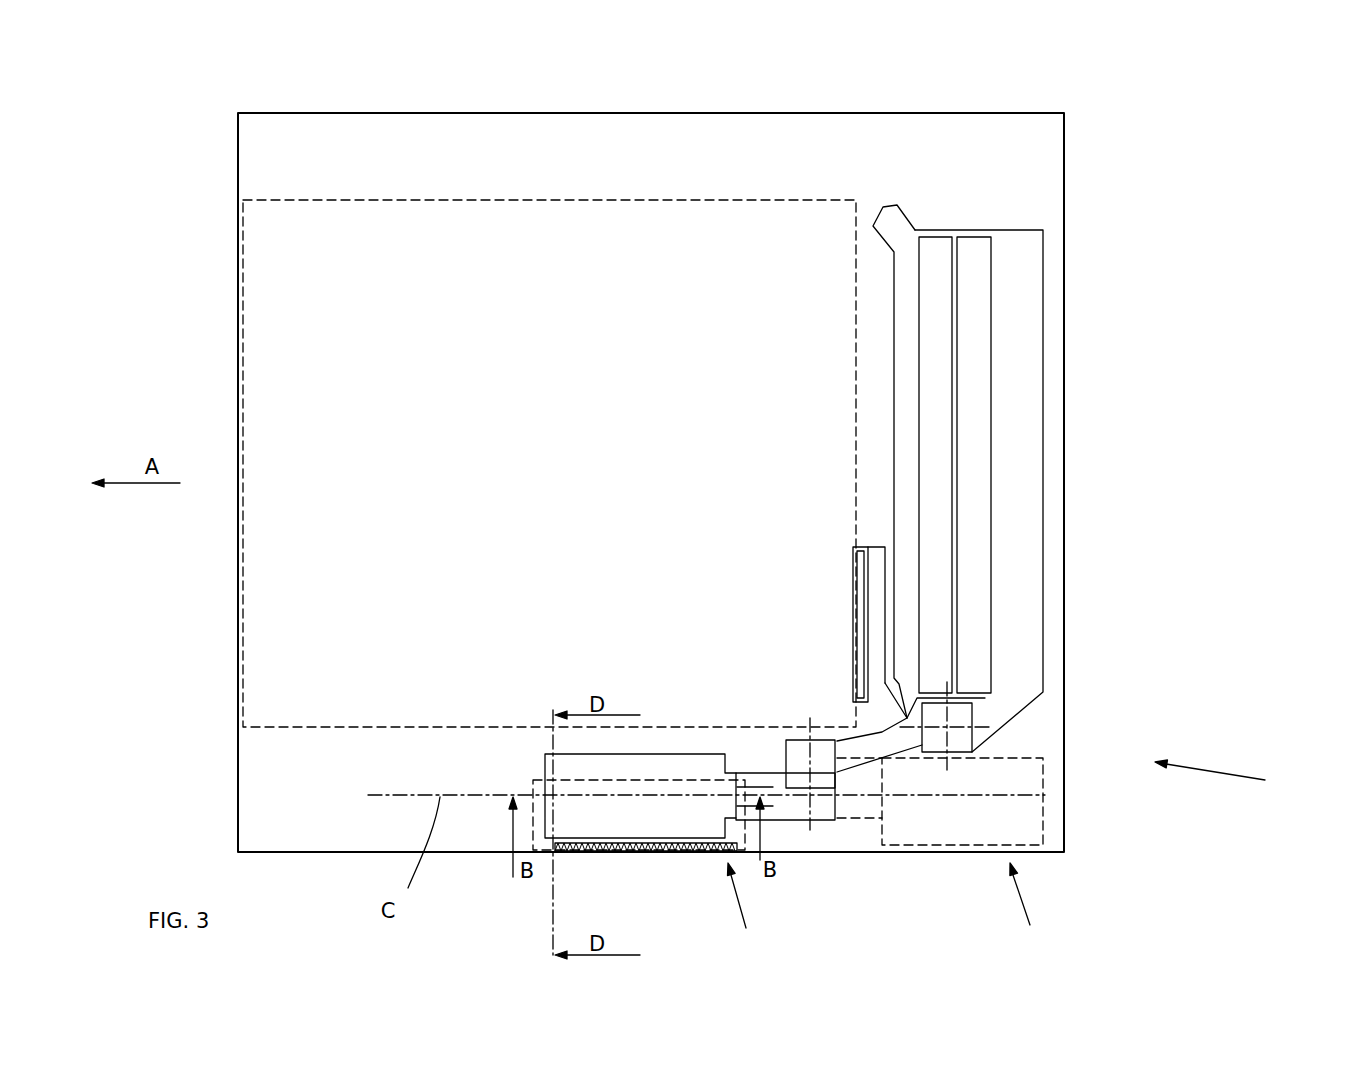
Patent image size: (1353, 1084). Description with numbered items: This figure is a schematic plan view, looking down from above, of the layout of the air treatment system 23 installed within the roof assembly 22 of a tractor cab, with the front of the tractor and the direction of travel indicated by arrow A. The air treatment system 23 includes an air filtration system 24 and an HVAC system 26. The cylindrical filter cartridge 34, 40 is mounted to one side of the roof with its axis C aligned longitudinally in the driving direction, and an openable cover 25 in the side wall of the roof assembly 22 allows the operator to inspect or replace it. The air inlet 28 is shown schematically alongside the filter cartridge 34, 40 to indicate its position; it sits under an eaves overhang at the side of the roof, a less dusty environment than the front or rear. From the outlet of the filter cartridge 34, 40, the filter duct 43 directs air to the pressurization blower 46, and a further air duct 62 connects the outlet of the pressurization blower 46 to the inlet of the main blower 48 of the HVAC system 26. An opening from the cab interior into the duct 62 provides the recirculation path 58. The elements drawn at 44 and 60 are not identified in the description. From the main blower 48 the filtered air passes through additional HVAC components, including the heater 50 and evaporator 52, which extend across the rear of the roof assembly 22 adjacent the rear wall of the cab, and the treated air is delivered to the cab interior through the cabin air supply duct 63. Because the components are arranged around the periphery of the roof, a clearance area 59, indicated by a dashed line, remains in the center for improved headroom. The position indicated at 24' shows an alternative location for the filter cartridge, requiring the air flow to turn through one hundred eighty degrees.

The roof assembly 22 is at (325, 112).
The air treatment system 23 is at (1231, 784).
The air filtration system 24 is at (758, 907).
The alternative filter cartridge position 24' is at (954, 855).
The openable cover 25 is at (530, 808).
The HVAC system 26 is at (997, 410).
The air inlet 28 is at (697, 855).
The filter cartridge 34 is at (640, 833).
The filter cartridge 40 is at (598, 770).
The filter duct 43 is at (770, 806).
The port 44 is at (782, 797).
The pressurization blower 46 is at (793, 743).
The main blower 48 is at (962, 735).
The heater 50 is at (936, 255).
The evaporator 52 is at (975, 255).
The recirculation path 58 is at (883, 732).
The clearance area 59 is at (442, 200).
The guide 60 is at (852, 625).
The further air duct 62 is at (886, 217).
The cabin air supply duct 63 is at (908, 680).